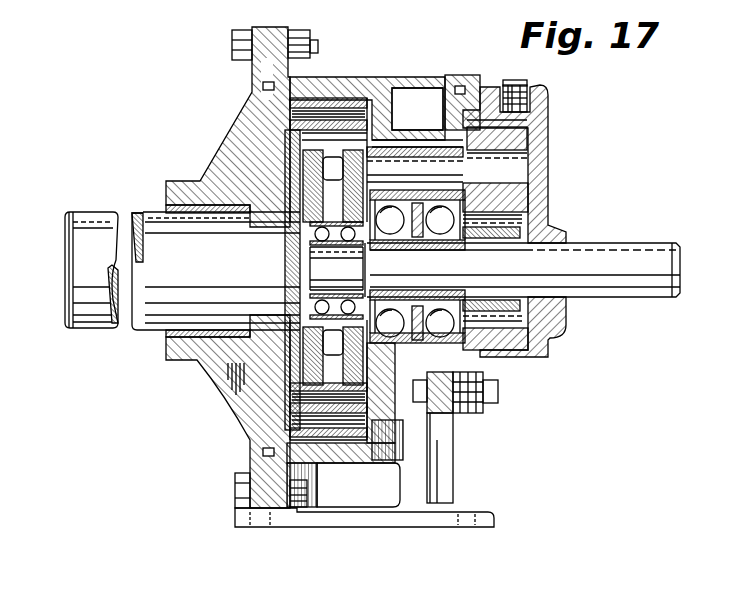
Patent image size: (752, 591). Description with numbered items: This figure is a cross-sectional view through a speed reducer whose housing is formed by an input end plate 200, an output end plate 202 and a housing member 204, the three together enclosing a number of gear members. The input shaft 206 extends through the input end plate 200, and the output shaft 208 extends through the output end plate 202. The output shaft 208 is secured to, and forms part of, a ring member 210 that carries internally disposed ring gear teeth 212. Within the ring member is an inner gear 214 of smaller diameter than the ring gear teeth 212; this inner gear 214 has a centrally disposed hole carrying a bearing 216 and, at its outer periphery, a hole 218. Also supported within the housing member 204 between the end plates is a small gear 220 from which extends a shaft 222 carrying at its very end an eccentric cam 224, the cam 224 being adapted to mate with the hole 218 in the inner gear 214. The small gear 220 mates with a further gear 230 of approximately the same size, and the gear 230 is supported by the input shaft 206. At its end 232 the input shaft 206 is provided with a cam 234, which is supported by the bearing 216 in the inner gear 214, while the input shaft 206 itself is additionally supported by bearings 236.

The input end plate 200 is at (549, 191).
The output end plate 202 is at (258, 110).
The housing member 204 is at (378, 73).
The input shaft 206 is at (645, 280).
The output shaft 208 is at (90, 317).
The ring member 210 is at (332, 96).
The ring gear teeth 212 is at (302, 133).
The inner gear 214 is at (307, 143).
The bearing 216 is at (340, 297).
The hole 218 is at (290, 176).
The small gear 220 is at (524, 126).
The shaft 222 is at (427, 167).
The eccentric cam 224 is at (398, 112).
The gear 230 is at (513, 324).
The end of the input shaft 232 is at (385, 263).
The cam 234 is at (320, 266).
The bearings 236 is at (428, 430).